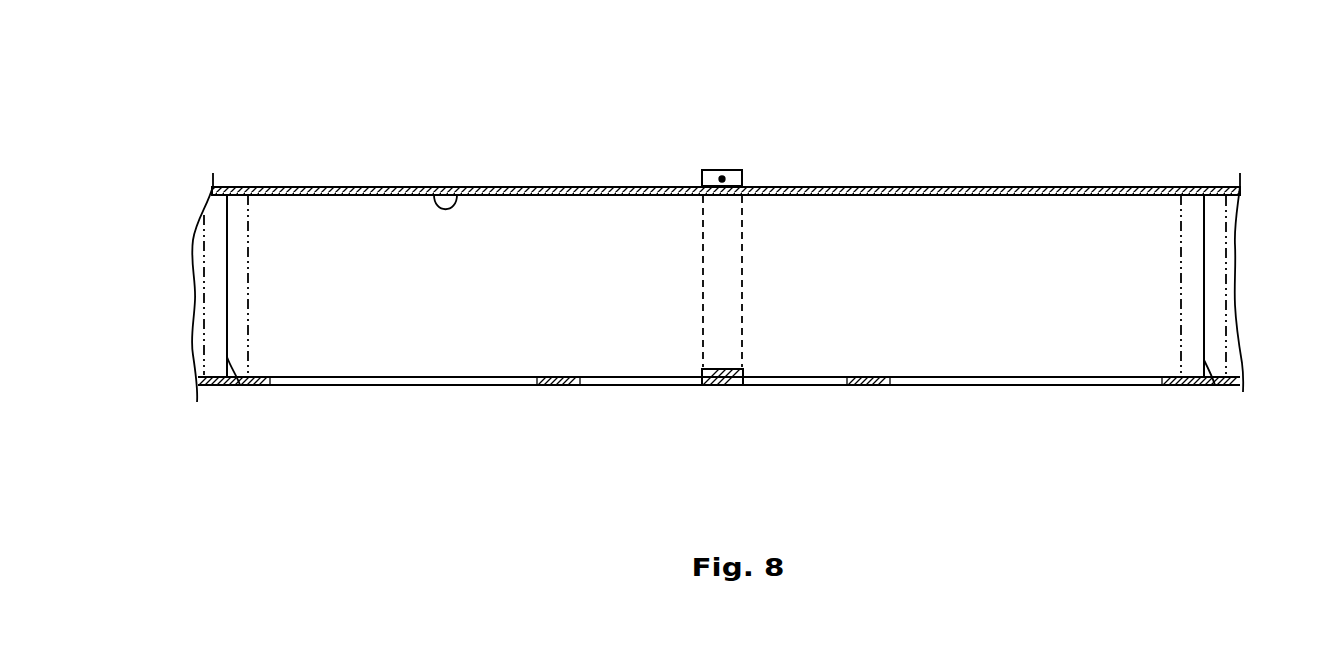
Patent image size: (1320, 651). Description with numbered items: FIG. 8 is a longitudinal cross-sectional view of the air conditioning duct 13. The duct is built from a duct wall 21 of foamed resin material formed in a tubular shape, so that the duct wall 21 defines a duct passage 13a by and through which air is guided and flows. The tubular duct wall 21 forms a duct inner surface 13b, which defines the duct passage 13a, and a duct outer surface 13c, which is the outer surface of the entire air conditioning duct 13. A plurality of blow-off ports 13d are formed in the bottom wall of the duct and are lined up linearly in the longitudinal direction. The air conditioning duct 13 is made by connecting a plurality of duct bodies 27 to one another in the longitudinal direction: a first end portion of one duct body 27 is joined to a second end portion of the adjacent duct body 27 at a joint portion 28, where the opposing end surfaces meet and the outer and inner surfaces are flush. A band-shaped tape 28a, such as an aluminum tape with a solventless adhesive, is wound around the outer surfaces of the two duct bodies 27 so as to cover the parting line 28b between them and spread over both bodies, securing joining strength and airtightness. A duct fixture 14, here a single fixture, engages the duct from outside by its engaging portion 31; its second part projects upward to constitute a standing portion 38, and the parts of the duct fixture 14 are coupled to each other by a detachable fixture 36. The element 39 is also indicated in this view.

The air conditioning duct 13 is at (1233, 185).
The duct passage 13a is at (459, 301).
The duct inner surface 13b is at (436, 186).
The duct outer surface 13c is at (390, 186).
The blow-off ports 13d is at (404, 387).
The duct fixture 14 is at (730, 387).
The duct wall 21 is at (1040, 186).
The duct body 27 is at (212, 387).
The joint portion 28 is at (228, 185).
The tape 28a is at (248, 237).
The parting line 28b is at (239, 388).
The engaging portion 31 is at (743, 340).
The fixture 36 is at (724, 177).
The standing portion 38 is at (710, 175).
The fixing portion 39 is at (702, 369).